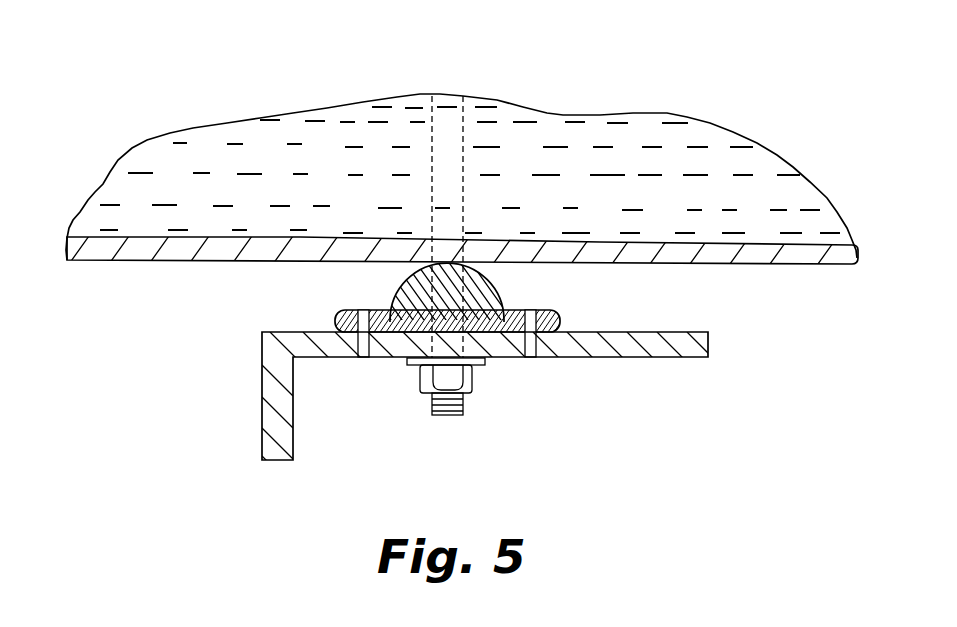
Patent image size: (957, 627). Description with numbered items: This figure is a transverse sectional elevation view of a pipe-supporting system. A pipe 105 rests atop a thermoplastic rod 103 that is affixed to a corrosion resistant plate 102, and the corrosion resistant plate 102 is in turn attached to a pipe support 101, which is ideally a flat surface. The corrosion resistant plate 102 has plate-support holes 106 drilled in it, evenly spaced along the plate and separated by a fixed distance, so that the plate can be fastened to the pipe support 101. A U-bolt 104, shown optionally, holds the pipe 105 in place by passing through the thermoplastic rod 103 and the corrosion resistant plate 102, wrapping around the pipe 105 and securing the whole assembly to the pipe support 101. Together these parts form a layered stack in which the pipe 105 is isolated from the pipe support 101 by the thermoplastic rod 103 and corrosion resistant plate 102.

The pipe support 101 is at (260, 378).
The corrosion resistant plate 102 is at (560, 322).
The thermoplastic rod 103 is at (392, 317).
The U-bolt 104 is at (442, 127).
The pipe 105 is at (96, 261).
The plate-support holes 106 is at (365, 325).